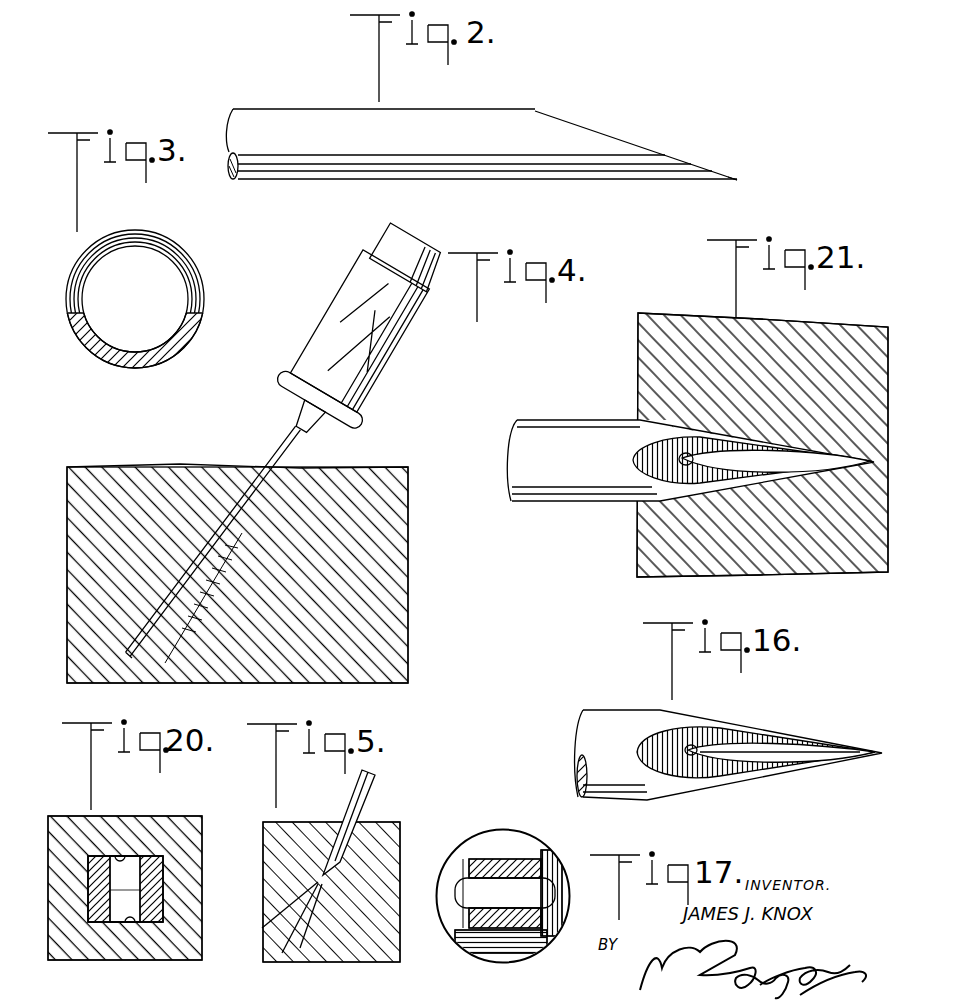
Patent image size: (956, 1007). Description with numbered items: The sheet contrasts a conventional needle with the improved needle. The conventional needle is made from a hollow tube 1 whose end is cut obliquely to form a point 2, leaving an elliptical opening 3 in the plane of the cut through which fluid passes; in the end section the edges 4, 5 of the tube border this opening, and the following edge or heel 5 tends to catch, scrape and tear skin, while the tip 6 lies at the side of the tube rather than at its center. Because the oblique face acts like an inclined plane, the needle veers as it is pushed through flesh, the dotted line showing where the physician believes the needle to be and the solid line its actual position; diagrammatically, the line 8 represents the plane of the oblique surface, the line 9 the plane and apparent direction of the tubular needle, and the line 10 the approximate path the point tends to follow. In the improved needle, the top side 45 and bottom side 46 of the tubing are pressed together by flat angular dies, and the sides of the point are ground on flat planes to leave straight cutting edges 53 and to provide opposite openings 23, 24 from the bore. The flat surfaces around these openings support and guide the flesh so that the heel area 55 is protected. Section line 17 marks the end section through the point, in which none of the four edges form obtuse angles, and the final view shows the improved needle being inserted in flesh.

In FIG. 4, the hollow tube 1 is at (290, 457).
In FIG. 5, the hollow tube 1 is at (355, 810).
In FIG. 2, the point 2 is at (672, 137).
In FIG. 2, the elliptical opening 3 is at (634, 103).
In FIG. 3, the elliptical opening 3 is at (144, 309).
In FIG. 2, the edge 4 is at (623, 139).
In FIG. 3, the edge 4 is at (67, 298).
In FIG. 3, the heel 5 is at (136, 231).
In FIG. 2, the tip 6 is at (737, 178).
In FIG. 5, the line representing plane of oblique surface 8 is at (278, 910).
In FIG. 5, the line indicating plane of tubular needle 9 is at (298, 950).
In FIG. 5, the line indicating approximate path of needle point 10 is at (284, 955).
In FIG. 16, the section line 17- 17 is at (750, 707).
In FIG. 21, the opening 23 is at (650, 475).
In FIG. 16, the opening 23 is at (727, 750).
In FIG. 20, the opening 23 is at (130, 920).
In FIG. 17, the opening 23 is at (462, 905).
In FIG. 20, the opening 24 is at (125, 862).
In FIG. 17, the opening 24 is at (545, 898).
In FIG. 20, the top side 45 is at (92, 910).
In FIG. 17, the top side 45 is at (498, 858).
In FIG. 20, the bottom side 46 is at (163, 875).
In FIG. 21, the cutting edges 53 is at (757, 443).
In FIG. 16, the cutting edges 53 is at (810, 738).
In FIG. 20, the cutting edges 53 is at (92, 857).
In FIG. 17, the cutting edges 53 is at (460, 857).
In FIG. 21, the heel area 55 is at (647, 445).
In FIG. 16, the heel area 55 is at (663, 733).